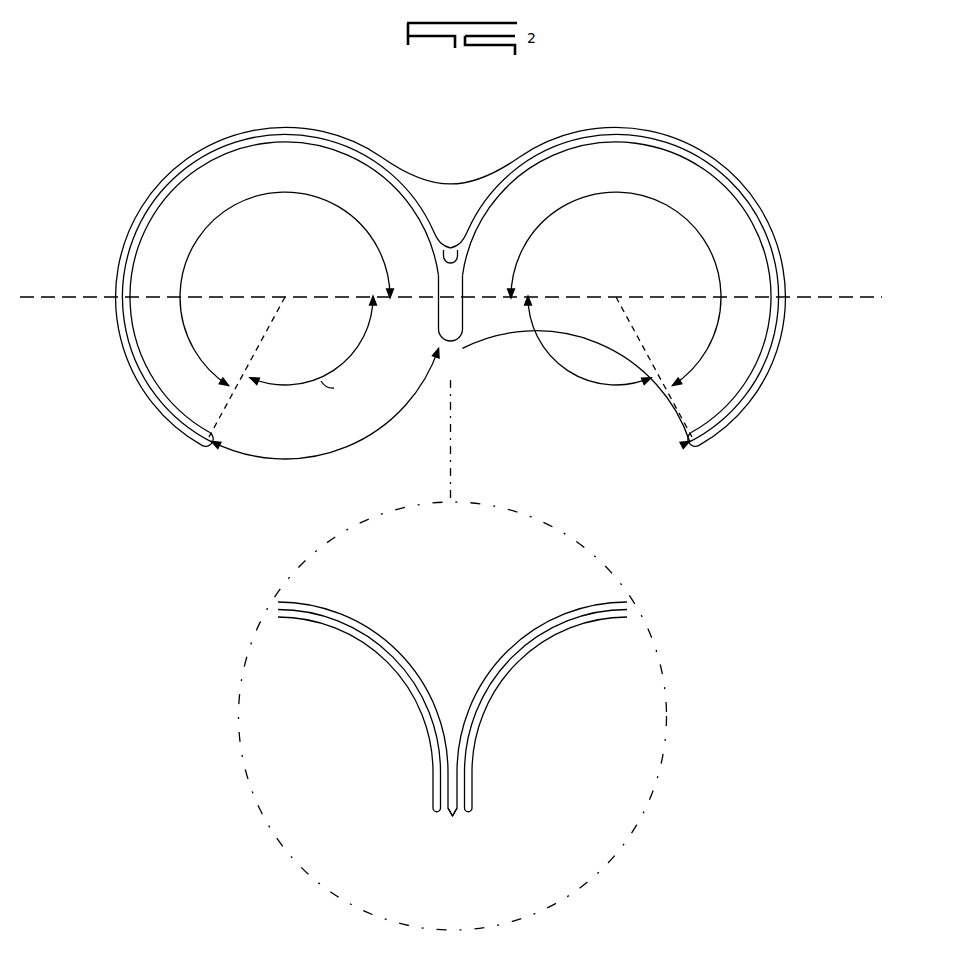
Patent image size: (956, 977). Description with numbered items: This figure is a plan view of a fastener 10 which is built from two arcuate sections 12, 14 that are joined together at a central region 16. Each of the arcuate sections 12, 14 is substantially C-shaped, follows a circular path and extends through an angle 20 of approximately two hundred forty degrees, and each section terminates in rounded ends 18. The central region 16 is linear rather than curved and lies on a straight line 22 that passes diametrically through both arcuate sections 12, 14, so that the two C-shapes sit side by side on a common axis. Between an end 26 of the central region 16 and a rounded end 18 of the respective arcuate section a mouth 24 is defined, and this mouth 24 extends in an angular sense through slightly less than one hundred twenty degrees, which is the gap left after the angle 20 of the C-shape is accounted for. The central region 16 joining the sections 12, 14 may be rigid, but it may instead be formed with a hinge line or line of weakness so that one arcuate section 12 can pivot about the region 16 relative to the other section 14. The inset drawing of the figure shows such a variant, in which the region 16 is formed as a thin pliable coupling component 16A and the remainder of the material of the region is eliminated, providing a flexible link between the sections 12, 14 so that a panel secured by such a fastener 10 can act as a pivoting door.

The fastener 10 is at (731, 103).
The arcuate section 12 is at (728, 174).
The arcuate section 14 is at (142, 208).
The central region 16 is at (449, 181).
The thin pliable coupling component 16A is at (455, 819).
The rounded ends 18 is at (203, 446).
The angle 20 is at (207, 228).
The straight line 22 is at (69, 300).
The mouth 24 is at (357, 447).
The end of the central region 26 is at (452, 347).